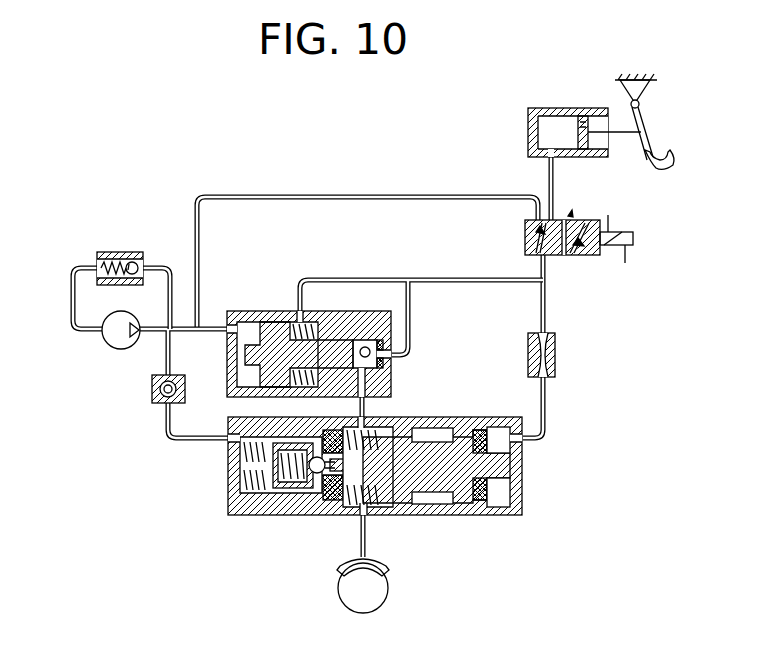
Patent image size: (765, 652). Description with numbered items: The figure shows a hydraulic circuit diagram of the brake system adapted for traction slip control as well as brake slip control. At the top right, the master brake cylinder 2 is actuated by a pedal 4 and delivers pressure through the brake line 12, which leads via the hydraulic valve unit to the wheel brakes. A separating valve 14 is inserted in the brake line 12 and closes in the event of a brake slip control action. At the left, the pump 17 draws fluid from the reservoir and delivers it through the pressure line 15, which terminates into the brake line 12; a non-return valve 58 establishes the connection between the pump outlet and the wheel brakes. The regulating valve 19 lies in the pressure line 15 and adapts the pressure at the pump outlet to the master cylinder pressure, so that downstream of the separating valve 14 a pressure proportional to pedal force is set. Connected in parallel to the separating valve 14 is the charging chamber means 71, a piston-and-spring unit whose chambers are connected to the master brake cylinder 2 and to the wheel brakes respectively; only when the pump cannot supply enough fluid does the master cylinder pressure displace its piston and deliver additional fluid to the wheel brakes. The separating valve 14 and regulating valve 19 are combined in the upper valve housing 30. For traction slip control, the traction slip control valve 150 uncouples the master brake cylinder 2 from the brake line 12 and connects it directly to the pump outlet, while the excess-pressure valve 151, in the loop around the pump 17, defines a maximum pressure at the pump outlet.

The master brake cylinder 2 is at (597, 153).
The pedal 4 is at (642, 167).
The brake line 12 is at (548, 180).
The separating valve 14 is at (378, 360).
The pressure line 15 is at (167, 431).
The pump 17 is at (120, 340).
The regulating valve 19 is at (308, 483).
The control valve 30 is at (326, 338).
The non-return valve 58 is at (152, 388).
The charging chamber means 71 is at (375, 483).
The traction slip control valve 150 is at (590, 257).
The excess-pressure valve 151 is at (121, 252).